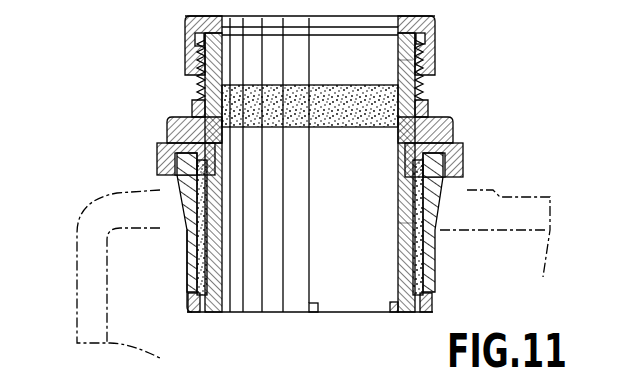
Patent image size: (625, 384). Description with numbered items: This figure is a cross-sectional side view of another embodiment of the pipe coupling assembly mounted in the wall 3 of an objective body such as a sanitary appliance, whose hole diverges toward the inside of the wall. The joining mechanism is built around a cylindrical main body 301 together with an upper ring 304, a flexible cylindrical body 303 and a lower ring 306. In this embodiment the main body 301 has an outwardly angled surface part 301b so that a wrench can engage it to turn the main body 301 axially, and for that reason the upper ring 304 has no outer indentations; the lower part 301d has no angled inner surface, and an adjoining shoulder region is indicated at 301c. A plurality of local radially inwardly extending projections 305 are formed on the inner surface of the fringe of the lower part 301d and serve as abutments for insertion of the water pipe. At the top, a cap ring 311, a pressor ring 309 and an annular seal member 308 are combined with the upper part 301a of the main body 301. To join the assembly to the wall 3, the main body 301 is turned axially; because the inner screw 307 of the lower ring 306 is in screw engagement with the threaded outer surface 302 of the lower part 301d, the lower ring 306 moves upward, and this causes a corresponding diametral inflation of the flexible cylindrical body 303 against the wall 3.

The wall 3 is at (90, 213).
The main body 301 is at (433, 110).
The upper part 301a is at (438, 88).
The outwardly angled surface part 301b is at (453, 127).
The shoulder of body 301c is at (205, 143).
The lower part 301d is at (403, 223).
The threaded outer surface 302 is at (193, 252).
The flexible cylindrical body 303 is at (437, 263).
The upper ring 304 is at (460, 163).
The local radially inwardly extending projections 305 is at (313, 313).
The lower ring 306 is at (200, 313).
The inner screw 307 is at (193, 288).
The annular seal member 308 is at (203, 107).
The pressor ring 309 is at (210, 53).
The cap ring 311 is at (438, 28).